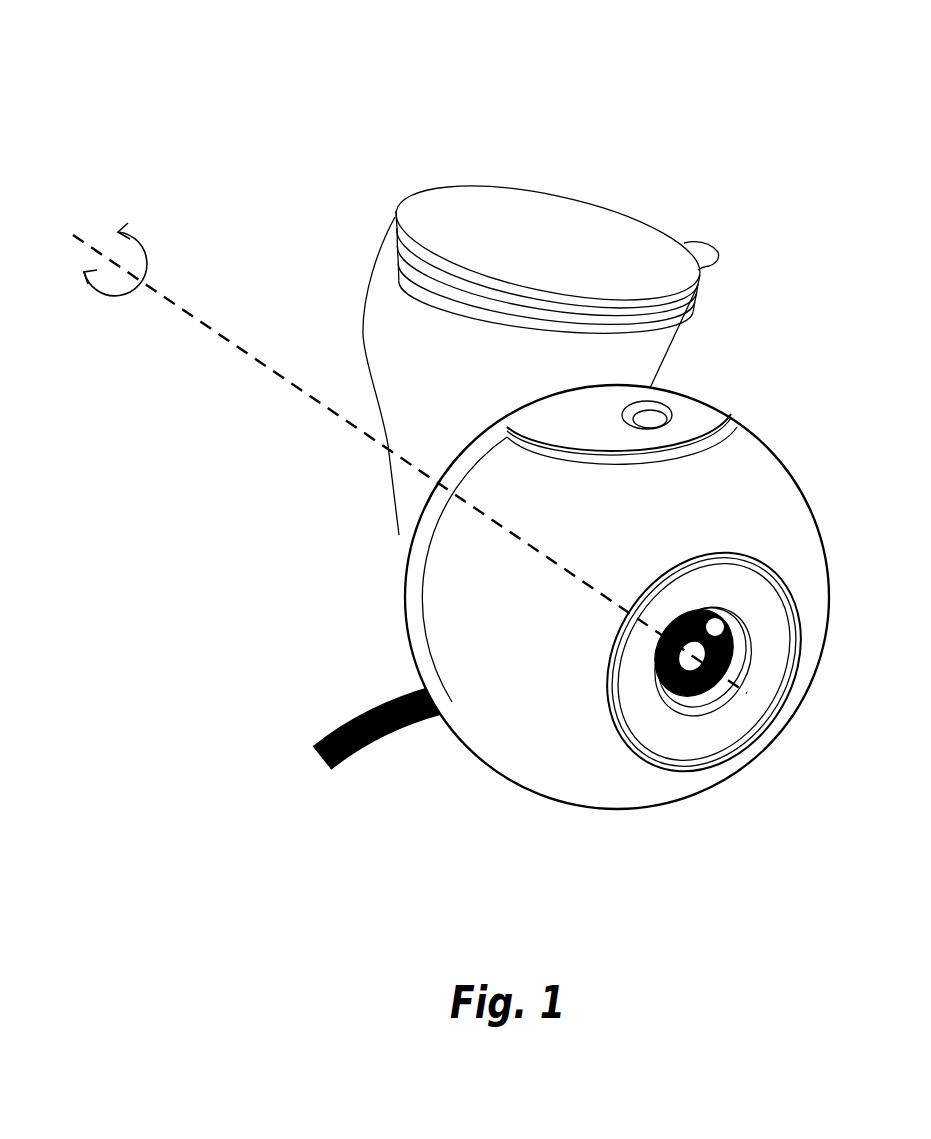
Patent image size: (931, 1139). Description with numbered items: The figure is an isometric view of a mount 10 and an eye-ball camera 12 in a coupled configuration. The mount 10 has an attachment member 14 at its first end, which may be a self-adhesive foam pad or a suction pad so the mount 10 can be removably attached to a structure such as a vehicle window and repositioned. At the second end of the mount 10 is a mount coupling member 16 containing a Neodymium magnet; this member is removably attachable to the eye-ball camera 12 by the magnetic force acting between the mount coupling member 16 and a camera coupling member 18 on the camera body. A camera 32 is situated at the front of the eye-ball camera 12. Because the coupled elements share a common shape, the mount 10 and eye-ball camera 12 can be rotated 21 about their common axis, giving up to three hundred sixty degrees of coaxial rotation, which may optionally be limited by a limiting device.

The mount 10 is at (375, 315).
The eye-ball camera 12 is at (575, 781).
The attachment member 14 is at (580, 210).
The mount coupling member 16 is at (413, 508).
The camera coupling member 18 is at (703, 432).
The common axis of rotation 21 is at (406, 458).
The camera 32 is at (728, 706).